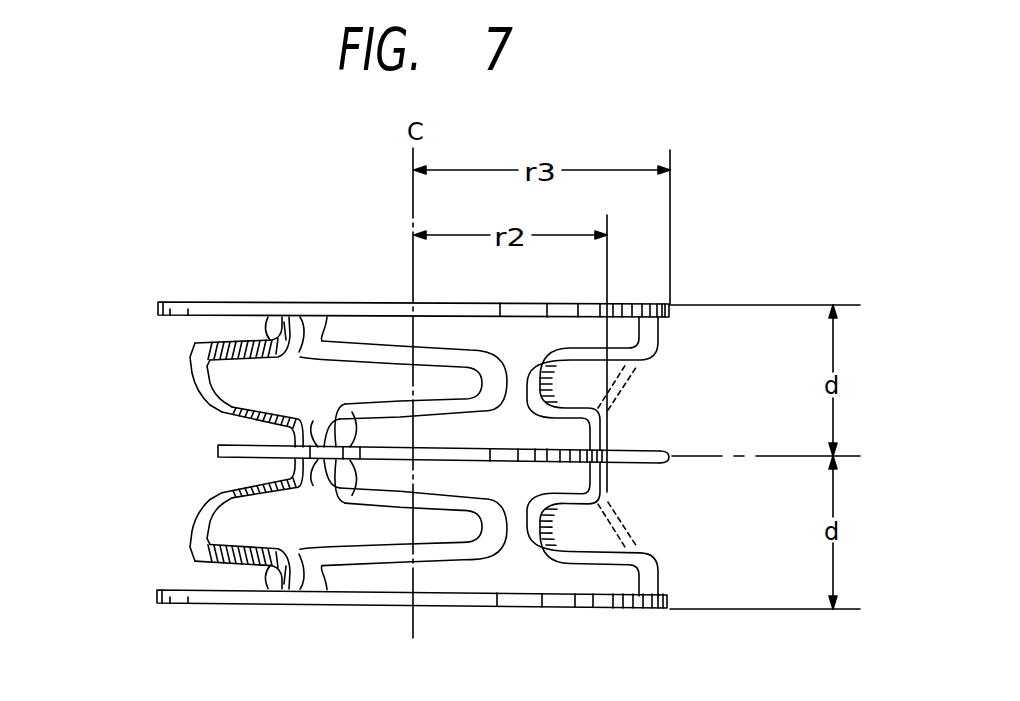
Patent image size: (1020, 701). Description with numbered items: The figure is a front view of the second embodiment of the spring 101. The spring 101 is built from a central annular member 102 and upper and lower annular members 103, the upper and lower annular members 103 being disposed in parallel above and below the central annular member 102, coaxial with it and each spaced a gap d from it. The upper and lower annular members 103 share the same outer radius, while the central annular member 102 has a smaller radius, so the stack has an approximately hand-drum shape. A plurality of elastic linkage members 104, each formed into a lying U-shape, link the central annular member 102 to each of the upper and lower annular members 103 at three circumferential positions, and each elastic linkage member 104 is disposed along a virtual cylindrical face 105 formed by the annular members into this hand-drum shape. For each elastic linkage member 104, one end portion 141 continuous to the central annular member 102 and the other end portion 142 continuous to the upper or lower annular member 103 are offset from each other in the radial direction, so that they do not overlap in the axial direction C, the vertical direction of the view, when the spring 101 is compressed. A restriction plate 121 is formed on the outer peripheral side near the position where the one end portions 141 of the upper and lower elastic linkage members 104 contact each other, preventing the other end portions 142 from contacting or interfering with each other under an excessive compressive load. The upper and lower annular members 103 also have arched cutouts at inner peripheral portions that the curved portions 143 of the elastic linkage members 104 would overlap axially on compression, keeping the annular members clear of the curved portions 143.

The spring 101 is at (680, 293).
The central annular member 102 is at (216, 451).
The upper and lower annular members 103 is at (160, 305).
The elastic linkage member 104 is at (213, 416).
The virtual cylindrical face 105 is at (630, 384).
The restriction plate 121 is at (351, 445).
The one end portion 141 is at (316, 416).
The other end portion 142 is at (308, 318).
The curved portion 143 is at (198, 386).